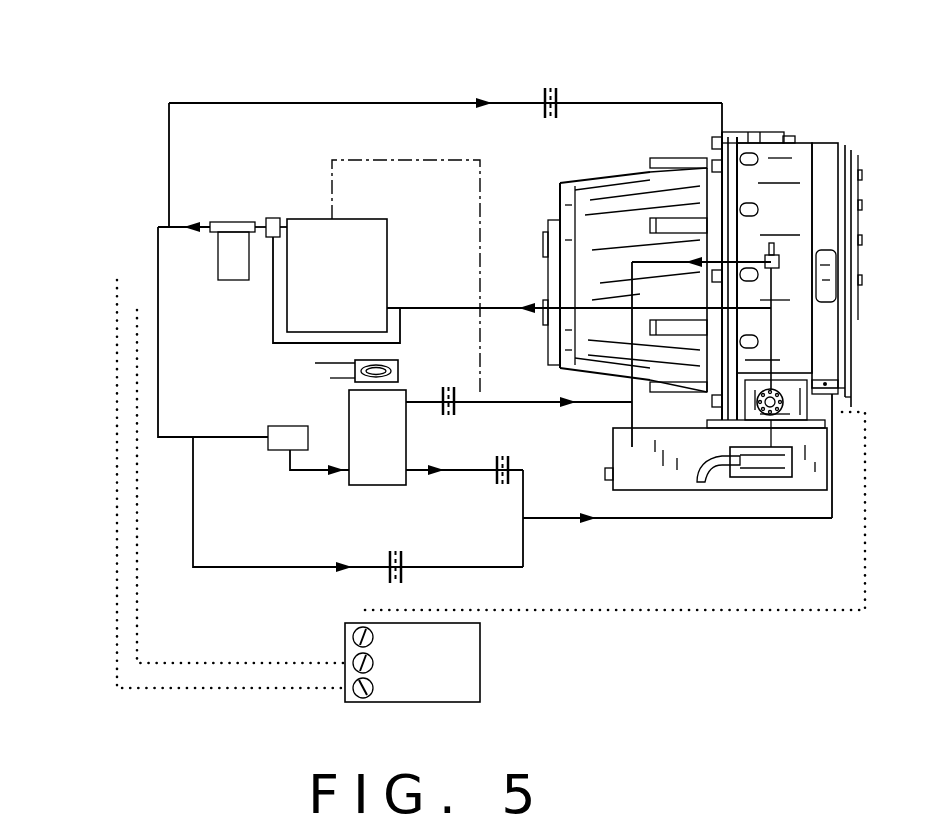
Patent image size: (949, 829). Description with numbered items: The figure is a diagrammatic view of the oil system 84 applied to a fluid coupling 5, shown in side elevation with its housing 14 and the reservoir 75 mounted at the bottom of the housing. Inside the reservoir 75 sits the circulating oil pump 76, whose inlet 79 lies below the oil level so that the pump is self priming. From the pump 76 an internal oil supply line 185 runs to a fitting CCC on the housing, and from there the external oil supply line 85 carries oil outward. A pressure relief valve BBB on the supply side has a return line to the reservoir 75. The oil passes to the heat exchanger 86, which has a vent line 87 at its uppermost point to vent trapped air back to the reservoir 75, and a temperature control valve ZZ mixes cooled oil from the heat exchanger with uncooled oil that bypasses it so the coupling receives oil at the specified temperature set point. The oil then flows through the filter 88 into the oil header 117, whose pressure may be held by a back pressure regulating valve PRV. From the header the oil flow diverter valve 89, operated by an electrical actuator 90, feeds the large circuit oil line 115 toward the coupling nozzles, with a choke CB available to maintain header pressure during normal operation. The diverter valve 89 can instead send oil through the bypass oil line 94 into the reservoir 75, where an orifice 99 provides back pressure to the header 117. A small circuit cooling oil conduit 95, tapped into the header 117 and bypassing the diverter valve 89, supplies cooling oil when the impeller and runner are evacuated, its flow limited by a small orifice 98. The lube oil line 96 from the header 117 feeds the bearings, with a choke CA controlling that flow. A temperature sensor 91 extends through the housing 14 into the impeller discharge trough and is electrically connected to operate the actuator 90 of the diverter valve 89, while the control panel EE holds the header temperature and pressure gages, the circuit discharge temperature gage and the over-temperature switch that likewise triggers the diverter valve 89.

The fluid coupling 5 is at (762, 122).
The housing 14 is at (795, 146).
The reservoir 75 is at (612, 442).
The circulating oil pump 76 is at (763, 478).
The inlet 79 is at (716, 480).
The oil system 84 is at (548, 565).
The external oil supply line 85 is at (430, 305).
The heat exchanger 86 is at (370, 232).
The vent line 87 is at (372, 160).
The filter 88 is at (237, 282).
The oil flow diverter valve 89 is at (406, 432).
The electrical actuator 90 is at (398, 372).
The temperature sensor 91 is at (785, 410).
The bypass oil line 94 is at (514, 405).
The circuit cooling oil conduit 95 is at (282, 566).
The lube oil line 96 is at (430, 103).
The orifice 98 is at (405, 553).
The orifice 99 is at (458, 385).
The circuit oil line 115 is at (485, 476).
The oil header 117 is at (175, 437).
The internal oil supply line 185 is at (773, 437).
The choke CA is at (561, 88).
The choke CB is at (505, 487).
The temperature control valve ZZ is at (276, 177).
The back pressure regulating valve PRV is at (283, 407).
The pressure relief valve BBB is at (777, 248).
The fitting CCC is at (790, 382).
The control panel EE is at (480, 660).